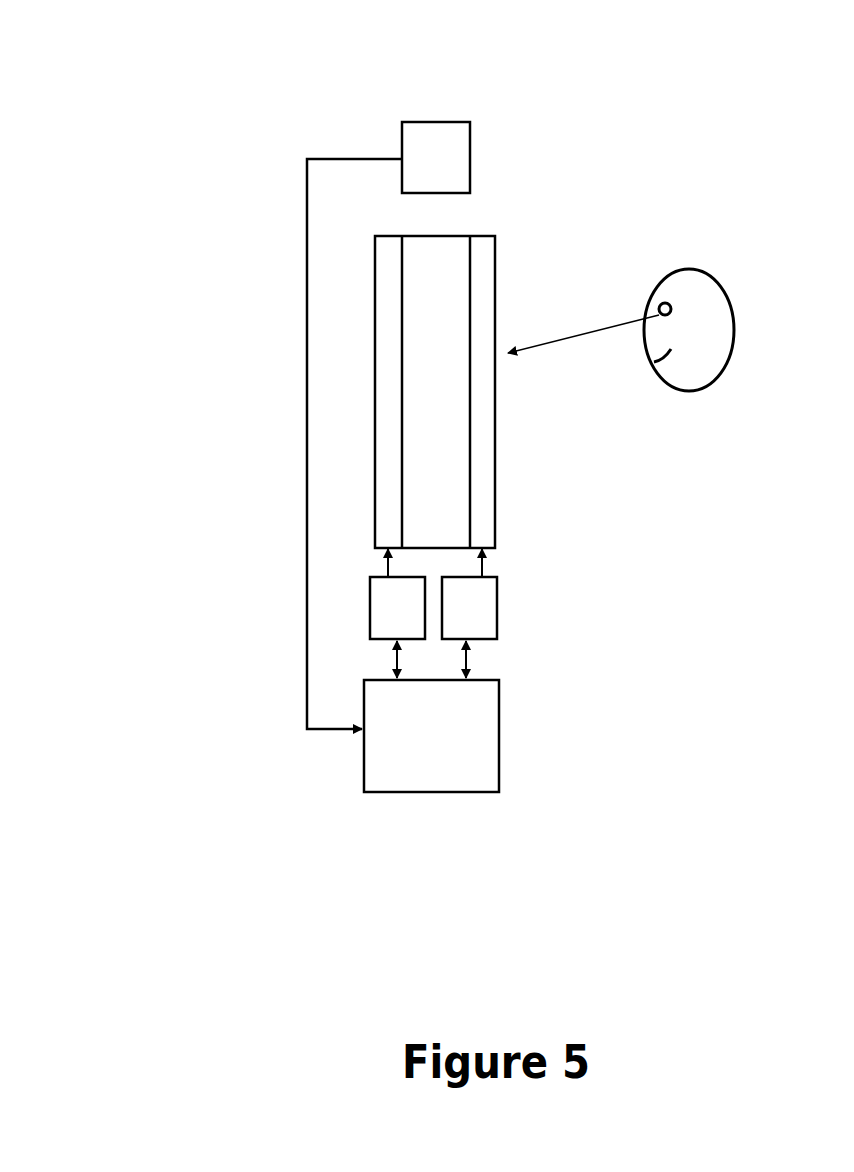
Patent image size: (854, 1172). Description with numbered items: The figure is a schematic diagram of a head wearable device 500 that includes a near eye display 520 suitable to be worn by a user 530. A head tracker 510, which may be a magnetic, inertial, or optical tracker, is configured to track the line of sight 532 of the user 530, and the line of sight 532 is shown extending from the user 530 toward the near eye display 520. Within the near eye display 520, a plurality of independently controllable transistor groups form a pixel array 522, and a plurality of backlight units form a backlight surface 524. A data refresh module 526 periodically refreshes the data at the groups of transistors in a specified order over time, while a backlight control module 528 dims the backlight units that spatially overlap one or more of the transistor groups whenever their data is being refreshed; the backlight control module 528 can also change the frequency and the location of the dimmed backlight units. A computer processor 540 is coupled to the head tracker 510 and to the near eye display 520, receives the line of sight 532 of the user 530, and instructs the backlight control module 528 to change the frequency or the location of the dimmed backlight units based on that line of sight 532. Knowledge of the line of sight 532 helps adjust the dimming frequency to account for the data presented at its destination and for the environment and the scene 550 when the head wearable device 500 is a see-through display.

The head wearable device 500 is at (263, 66).
The head tracker 510 is at (402, 132).
The near eye display 520 is at (407, 235).
The pixel array 522 is at (500, 482).
The backlight surface 524 is at (373, 322).
The data refresh module 526 is at (497, 630).
The backlight control module 528 is at (370, 614).
The user 530 is at (663, 282).
The line of sight 532 is at (595, 328).
The computer processor 540 is at (501, 742).
The scene 550 is at (79, 458).